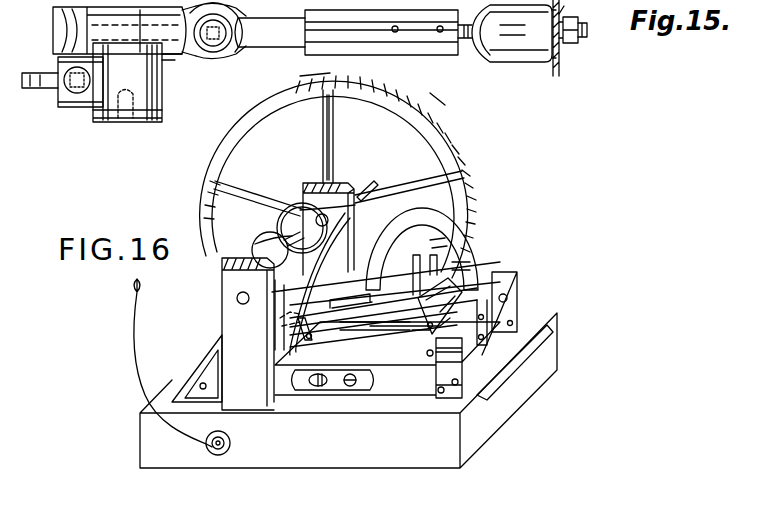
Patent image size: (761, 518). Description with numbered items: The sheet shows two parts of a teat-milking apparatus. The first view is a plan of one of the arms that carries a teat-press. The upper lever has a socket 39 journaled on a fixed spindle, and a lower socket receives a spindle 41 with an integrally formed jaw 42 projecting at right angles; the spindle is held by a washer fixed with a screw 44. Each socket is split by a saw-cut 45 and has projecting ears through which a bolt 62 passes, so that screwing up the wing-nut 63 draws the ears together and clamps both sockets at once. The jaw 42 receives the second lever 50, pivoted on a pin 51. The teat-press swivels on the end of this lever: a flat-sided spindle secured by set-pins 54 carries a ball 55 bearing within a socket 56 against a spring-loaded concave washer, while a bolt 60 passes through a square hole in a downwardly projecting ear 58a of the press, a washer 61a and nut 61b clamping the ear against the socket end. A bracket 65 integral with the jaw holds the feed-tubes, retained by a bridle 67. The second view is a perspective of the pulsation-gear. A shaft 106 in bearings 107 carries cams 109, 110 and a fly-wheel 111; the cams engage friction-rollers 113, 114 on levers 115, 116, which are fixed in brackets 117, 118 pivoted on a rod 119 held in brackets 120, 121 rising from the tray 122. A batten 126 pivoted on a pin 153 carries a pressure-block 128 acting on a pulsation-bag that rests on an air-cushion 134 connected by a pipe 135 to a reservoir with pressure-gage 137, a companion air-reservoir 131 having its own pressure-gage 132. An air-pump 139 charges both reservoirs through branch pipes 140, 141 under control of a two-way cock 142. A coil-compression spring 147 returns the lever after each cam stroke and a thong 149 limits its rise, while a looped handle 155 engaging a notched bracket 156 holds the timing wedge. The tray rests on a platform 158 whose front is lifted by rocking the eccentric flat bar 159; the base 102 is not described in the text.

In FIG. 15, the socket 39 is at (162, 100).
In FIG. 15, the spindle 41 is at (148, 70).
In FIG. 15, the jaw 42 is at (198, 47).
In FIG. 15, the screw 44 is at (126, 120).
In FIG. 15, the saw-cut 45 is at (152, 118).
In FIG. 15, the second lever 50 is at (294, 32).
In FIG. 15, the pin 51 is at (216, 44).
In FIG. 15, the set-pins 54 is at (440, 34).
In FIG. 15, the ball 55 is at (476, 44).
In FIG. 15, the socket 56 is at (540, 44).
In FIG. 15, the downwardly-projecting ear 58a is at (560, 66).
In FIG. 15, the bolt 60 is at (578, 27).
In FIG. 15, the washer 61a is at (560, 12).
In FIG. 15, the nut 61b is at (570, 37).
In FIG. 15, the bolt 62 is at (78, 95).
In FIG. 15, the wing-nut 63 is at (48, 72).
In FIG. 15, the bracket 65 is at (151, 31).
In FIG. 15, the bridle 67 is at (76, 33).
In FIG. 16, the base 102 is at (147, 428).
In FIG. 16, the shaft 106 is at (282, 238).
In FIG. 16, the bearings 107 is at (310, 188).
In FIG. 16, the cam 109 is at (283, 190).
In FIG. 16, the cam 110 is at (214, 256).
In FIG. 16, the fly-wheel 111 is at (458, 148).
In FIG. 16, the friction-roller 113 is at (302, 228).
In FIG. 16, the friction-roller 114 is at (278, 250).
In FIG. 16, the lever 115 is at (412, 262).
In FIG. 16, the lever 116 is at (355, 333).
In FIG. 16, the bracket 117 is at (470, 284).
In FIG. 16, the bracket 118 is at (483, 322).
In FIG. 16, the rod 119 is at (430, 357).
In FIG. 16, the bracket 120 is at (518, 278).
In FIG. 16, the bracket 121 is at (450, 357).
In FIG. 16, the tray 122 is at (393, 396).
In FIG. 16, the batten 126 is at (312, 338).
In FIG. 16, the pressure-block 128 is at (288, 322).
In FIG. 16, the air-reservoir 131 is at (392, 330).
In FIG. 16, the pressure-gage 132 is at (452, 214).
In FIG. 16, the air-cushion 134 is at (422, 334).
In FIG. 16, the pipe 135 is at (340, 300).
In FIG. 16, the pressure-gage 137 is at (466, 258).
In FIG. 16, the air-pump 139 is at (350, 188).
In FIG. 16, the branch pipe 140 is at (418, 222).
In FIG. 16, the branch pipe 141 is at (398, 196).
In FIG. 16, the two-way cock 142 is at (370, 192).
In FIG. 16, the coil-compression spring 147 is at (360, 343).
In FIG. 16, the thong 149 is at (340, 384).
In FIG. 16, the pin 153 is at (508, 298).
In FIG. 16, the looped handle 155 is at (418, 268).
In FIG. 16, the notched bracket 156 is at (452, 230).
In FIG. 16, the platform 158 is at (500, 376).
In FIG. 16, the flat bar 159 is at (222, 455).